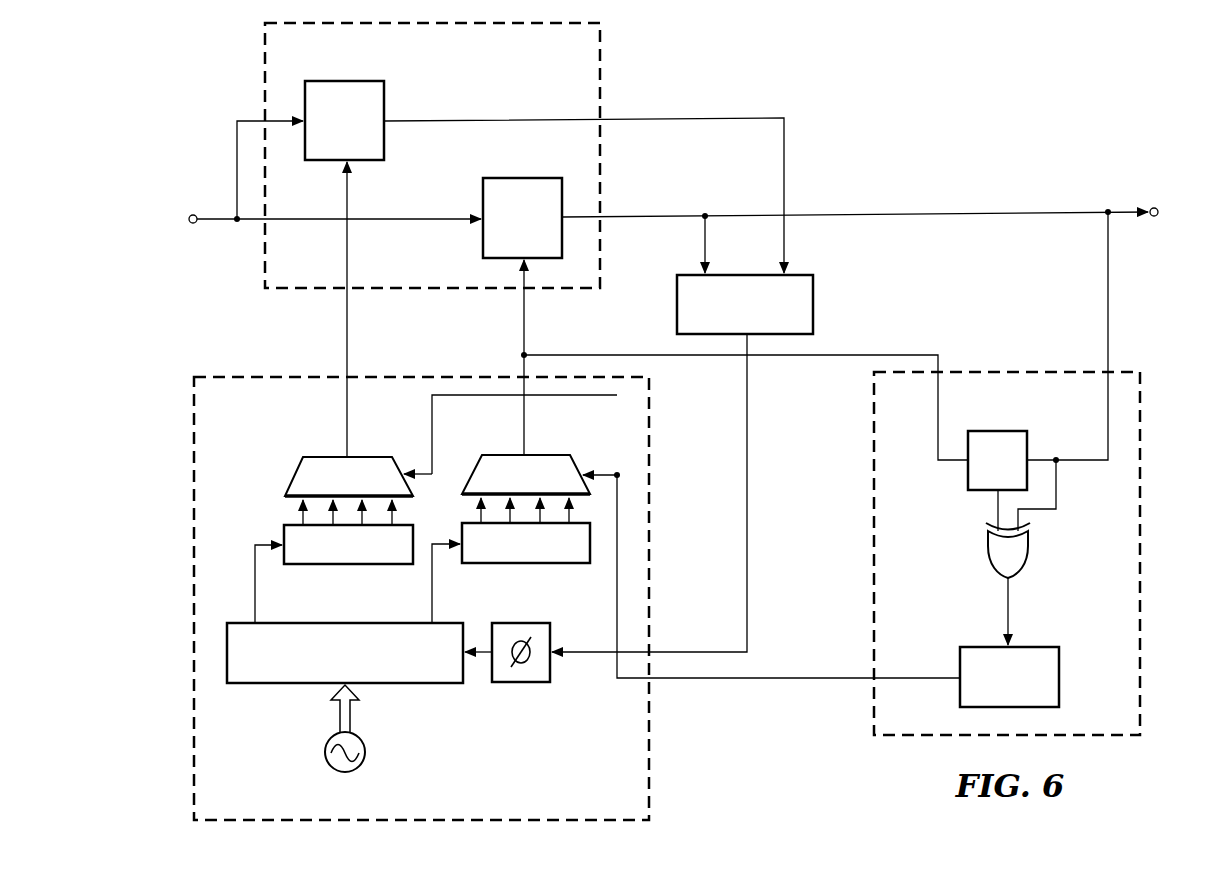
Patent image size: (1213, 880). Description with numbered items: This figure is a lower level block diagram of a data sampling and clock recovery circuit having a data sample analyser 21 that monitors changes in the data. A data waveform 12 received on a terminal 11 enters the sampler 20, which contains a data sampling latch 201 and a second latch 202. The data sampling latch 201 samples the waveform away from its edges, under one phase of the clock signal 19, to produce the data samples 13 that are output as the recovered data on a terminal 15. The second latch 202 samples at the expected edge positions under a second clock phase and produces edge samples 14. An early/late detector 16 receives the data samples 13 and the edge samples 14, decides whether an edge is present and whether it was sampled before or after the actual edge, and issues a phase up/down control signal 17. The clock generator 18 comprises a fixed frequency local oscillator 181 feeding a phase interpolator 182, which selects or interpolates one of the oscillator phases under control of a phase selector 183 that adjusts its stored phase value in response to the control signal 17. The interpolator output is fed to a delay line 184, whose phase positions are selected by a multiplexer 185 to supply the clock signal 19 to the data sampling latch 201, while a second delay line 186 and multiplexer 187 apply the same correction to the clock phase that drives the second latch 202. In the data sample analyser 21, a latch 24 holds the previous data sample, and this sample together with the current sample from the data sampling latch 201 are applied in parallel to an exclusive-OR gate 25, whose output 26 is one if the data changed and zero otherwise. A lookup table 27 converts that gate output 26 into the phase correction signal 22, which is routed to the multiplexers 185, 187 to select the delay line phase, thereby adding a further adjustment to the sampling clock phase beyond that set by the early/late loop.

The terminal 11 is at (191, 224).
The data waveform 12 is at (219, 219).
The data samples 13 is at (635, 216).
The edge samples 14 is at (680, 118).
The terminal 15 is at (1156, 207).
The early/late detector 16 is at (813, 305).
The control signal 17 is at (747, 540).
The clock generator 18 is at (184, 713).
The clock signal 19 is at (744, 360).
The sampler 20 is at (264, 65).
The data sample analyser 21 is at (1150, 563).
The adjustment signal 22 is at (800, 678).
The latch 24 is at (1000, 431).
The exclusive-OR gate 25 is at (988, 560).
The transition signal line 26 is at (1008, 600).
The lookup table 27 is at (1059, 685).
The local oscillator 181 is at (366, 758).
The phase interpolator 182 is at (290, 685).
The phase selector 183 is at (525, 683).
The delay line 184 is at (530, 563).
The multiplexer 185 is at (500, 455).
The delay line 186 is at (343, 564).
The multiplexer 187 is at (325, 457).
The data sampling latch 201 is at (527, 178).
The second latch 202 is at (335, 81).